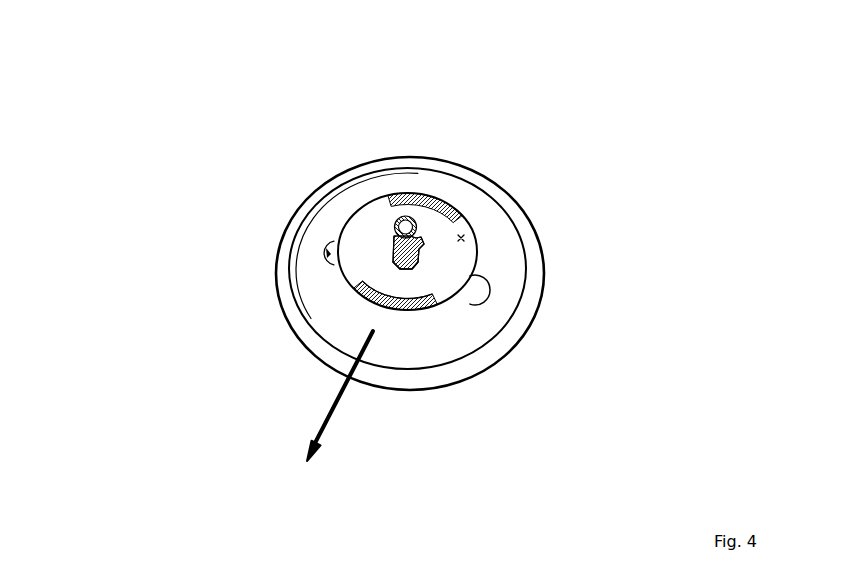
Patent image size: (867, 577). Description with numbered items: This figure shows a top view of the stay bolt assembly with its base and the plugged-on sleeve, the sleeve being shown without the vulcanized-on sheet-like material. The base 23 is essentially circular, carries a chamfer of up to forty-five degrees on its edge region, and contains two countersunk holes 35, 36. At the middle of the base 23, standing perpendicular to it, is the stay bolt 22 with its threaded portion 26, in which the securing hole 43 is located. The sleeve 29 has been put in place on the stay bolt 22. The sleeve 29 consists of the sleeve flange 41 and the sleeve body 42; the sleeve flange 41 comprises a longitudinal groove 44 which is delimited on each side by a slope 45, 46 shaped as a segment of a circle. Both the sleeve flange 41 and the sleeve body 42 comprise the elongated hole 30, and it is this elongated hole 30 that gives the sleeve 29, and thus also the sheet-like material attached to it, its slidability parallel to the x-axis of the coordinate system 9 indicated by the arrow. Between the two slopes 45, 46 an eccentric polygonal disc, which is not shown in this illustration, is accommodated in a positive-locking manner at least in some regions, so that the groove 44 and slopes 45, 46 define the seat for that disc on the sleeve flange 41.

The coordinate system 9 is at (332, 409).
The stay bolt 22 is at (409, 253).
The base 23 is at (459, 184).
The threaded portion 26 is at (414, 250).
The sleeve 29 is at (463, 239).
The elongated hole 30 is at (233, 286).
The sleeve body 42 is at (407, 268).
The countersunk hole 35 is at (330, 243).
The countersunk hole 36 is at (478, 288).
The sleeve flange 41 is at (397, 303).
The securing hole 43 is at (394, 232).
The longitudinal groove 44 is at (374, 241).
The slope 45 is at (373, 307).
The slope 46 is at (420, 193).